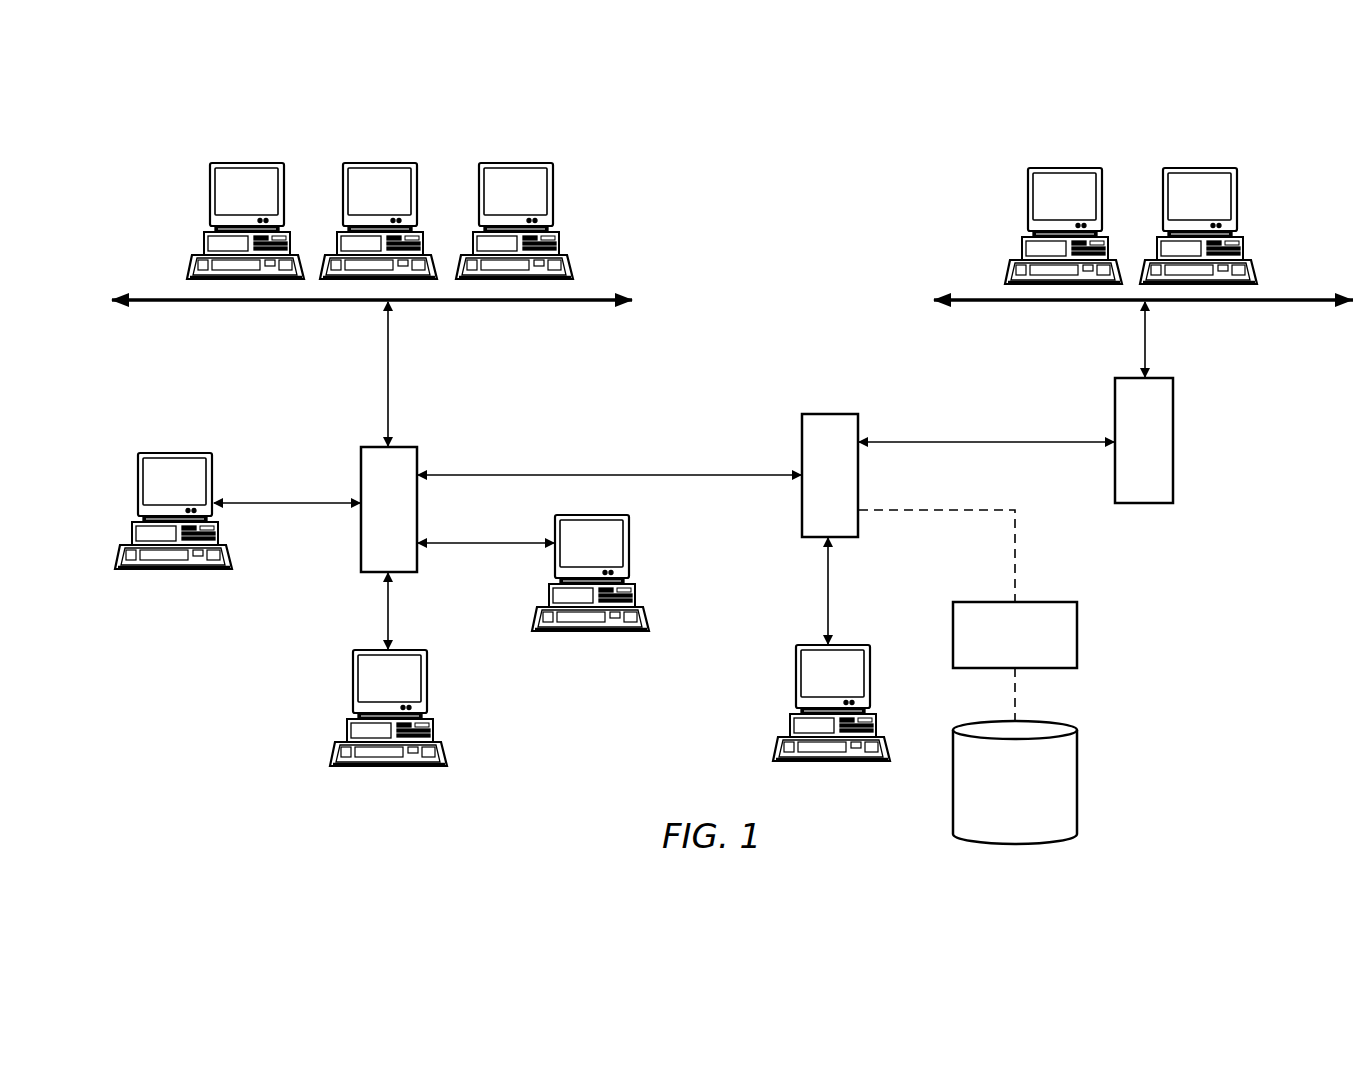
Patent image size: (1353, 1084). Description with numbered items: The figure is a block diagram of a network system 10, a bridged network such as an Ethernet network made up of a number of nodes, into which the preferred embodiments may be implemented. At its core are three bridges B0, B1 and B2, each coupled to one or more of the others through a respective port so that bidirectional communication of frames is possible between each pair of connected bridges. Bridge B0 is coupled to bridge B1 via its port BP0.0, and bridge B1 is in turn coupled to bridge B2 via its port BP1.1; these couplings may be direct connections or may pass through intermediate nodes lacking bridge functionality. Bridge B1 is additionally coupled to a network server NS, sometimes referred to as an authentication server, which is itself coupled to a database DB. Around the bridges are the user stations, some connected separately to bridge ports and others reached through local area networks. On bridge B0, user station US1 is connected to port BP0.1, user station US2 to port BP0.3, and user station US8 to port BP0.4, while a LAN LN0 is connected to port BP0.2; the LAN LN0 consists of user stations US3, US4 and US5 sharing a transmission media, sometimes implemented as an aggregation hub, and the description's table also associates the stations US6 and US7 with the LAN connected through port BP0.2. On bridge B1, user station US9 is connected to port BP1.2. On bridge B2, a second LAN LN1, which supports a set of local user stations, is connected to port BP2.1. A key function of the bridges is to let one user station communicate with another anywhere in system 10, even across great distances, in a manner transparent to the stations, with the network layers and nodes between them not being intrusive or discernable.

The network system 10 is at (84, 201).
The user station US1 is at (173, 511).
The user station US2 is at (388, 708).
The user station US3 is at (245, 221).
The user station US4 is at (378, 221).
The user station US5 is at (514, 221).
The user station US6 is at (1063, 226).
The user station US7 is at (1198, 226).
The user station US8 is at (590, 573).
The user station US9 is at (831, 703).
The bridge B0 is at (389, 509).
The bridge B1 is at (830, 475).
The bridge B2 is at (1144, 440).
The LAN LN0 is at (372, 280).
The LAN LN1 is at (1143, 286).
The network server NS is at (1078, 636).
The database DB is at (1078, 786).
The port BP0.0 is at (609, 459).
The port BP0.1 is at (287, 487).
The port BP0.2 is at (355, 374).
The port BP0.3 is at (355, 611).
The port BP0.4 is at (486, 527).
The port BP1.1 is at (986, 425).
The port BP1.2 is at (860, 591).
The port BP2.1 is at (1112, 339).